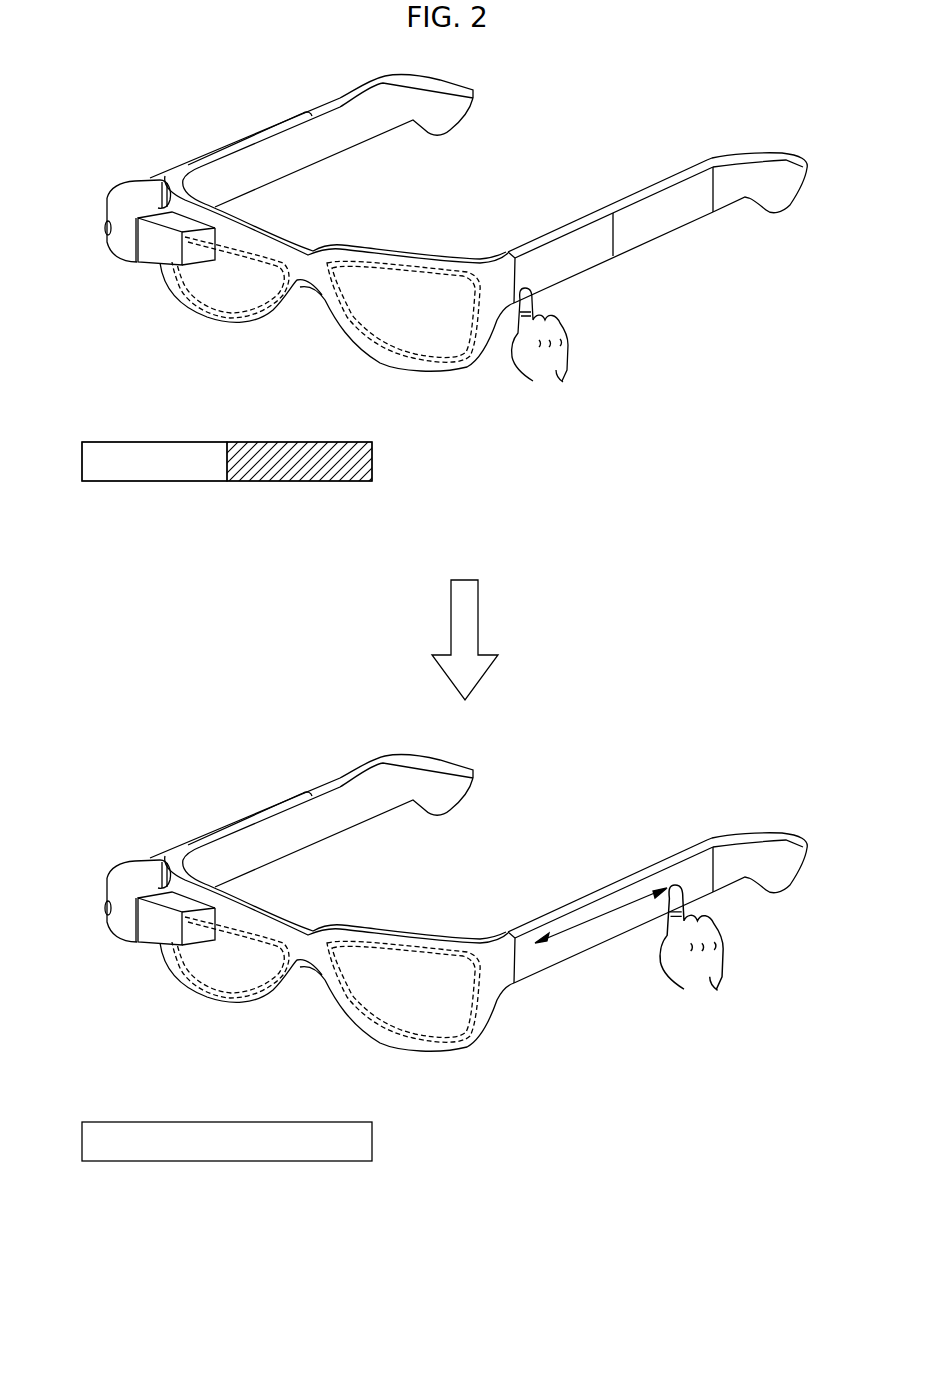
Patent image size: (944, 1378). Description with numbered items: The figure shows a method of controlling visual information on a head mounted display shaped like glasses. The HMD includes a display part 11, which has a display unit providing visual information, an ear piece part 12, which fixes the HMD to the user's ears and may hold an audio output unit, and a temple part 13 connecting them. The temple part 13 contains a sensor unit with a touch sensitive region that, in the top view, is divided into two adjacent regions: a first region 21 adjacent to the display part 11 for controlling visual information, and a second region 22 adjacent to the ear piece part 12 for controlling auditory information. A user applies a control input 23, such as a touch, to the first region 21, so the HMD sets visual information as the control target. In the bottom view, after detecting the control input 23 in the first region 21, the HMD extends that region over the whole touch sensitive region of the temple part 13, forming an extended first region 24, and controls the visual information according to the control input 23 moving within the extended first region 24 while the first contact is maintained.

The display part 11 is at (160, 258).
The ear piece part 12 is at (770, 208).
The temple part 13 is at (681, 176).
The first region 21 is at (593, 258).
The second region 22 is at (683, 216).
The control input 23 is at (553, 372).
The extended first region 24 is at (593, 938).